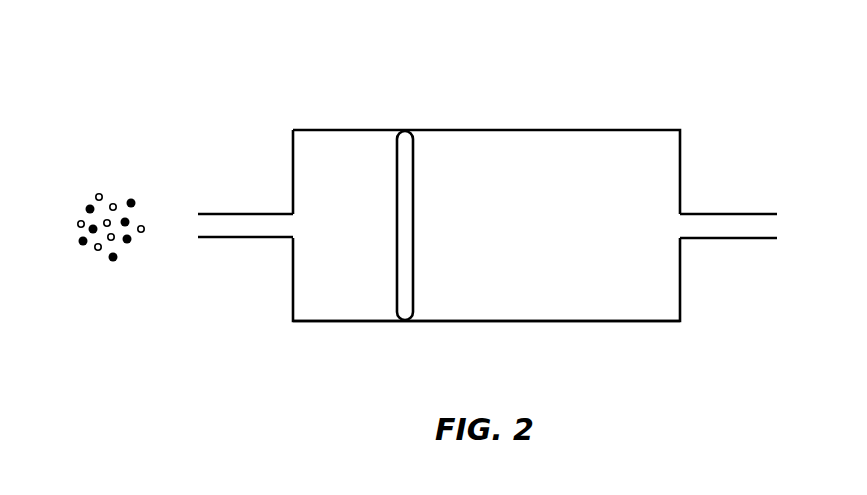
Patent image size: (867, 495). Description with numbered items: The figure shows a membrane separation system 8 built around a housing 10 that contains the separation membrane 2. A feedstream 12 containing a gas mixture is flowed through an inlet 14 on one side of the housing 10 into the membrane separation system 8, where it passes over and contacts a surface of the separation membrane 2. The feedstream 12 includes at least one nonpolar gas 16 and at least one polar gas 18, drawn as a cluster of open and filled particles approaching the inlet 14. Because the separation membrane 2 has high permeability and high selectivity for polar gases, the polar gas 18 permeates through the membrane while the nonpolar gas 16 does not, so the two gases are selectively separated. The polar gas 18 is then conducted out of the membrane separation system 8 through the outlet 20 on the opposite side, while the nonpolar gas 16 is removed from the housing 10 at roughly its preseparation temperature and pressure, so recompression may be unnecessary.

The separation membrane 2 is at (407, 155).
The membrane separation system 8 is at (634, 98).
The housing 10 is at (538, 322).
The feedstream 12 is at (113, 183).
The inlet 14 is at (248, 225).
The nonpolar gas 16 is at (114, 204).
The polar gas 18 is at (134, 200).
The outlet 20 is at (743, 228).